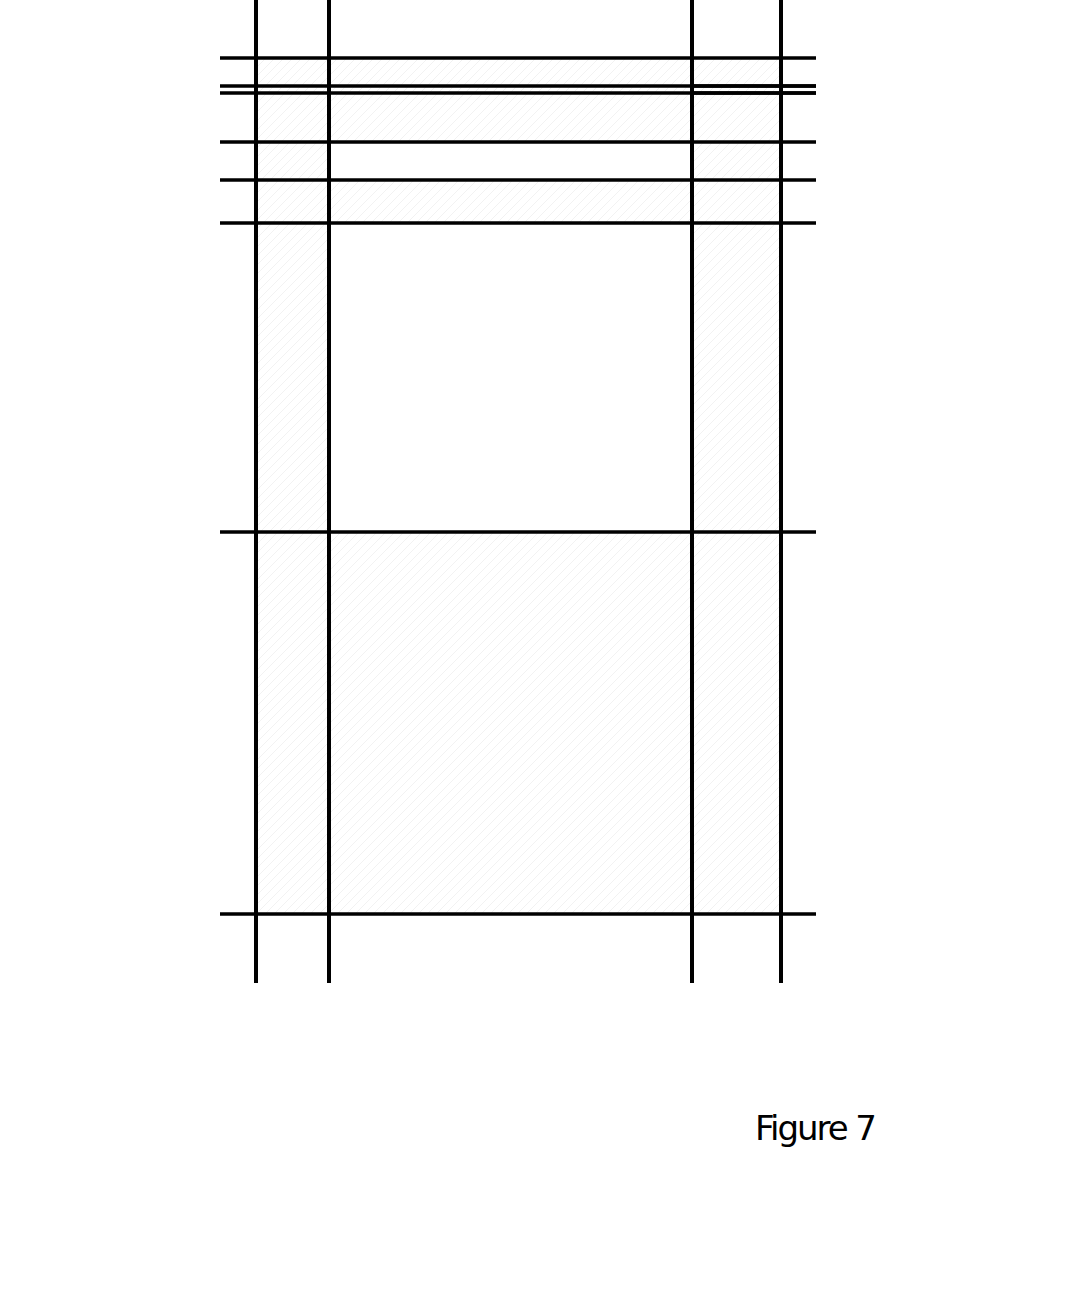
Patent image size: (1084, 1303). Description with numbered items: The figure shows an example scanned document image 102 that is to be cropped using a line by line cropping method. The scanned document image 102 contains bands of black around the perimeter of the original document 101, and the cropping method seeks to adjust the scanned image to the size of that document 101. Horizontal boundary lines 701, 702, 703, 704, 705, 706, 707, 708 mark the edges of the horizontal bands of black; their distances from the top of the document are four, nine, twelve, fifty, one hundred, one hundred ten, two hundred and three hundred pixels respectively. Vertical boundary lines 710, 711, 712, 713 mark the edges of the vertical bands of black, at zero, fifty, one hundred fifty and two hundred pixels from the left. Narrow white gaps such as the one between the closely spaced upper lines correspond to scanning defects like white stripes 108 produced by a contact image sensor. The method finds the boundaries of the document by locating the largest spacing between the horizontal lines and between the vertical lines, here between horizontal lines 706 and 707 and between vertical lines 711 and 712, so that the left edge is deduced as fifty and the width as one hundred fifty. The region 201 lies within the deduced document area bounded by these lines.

The boundary line 701 is at (220, 58).
The boundary line 702 is at (220, 86).
The boundary line 703 is at (220, 93).
The boundary line 704 is at (220, 142).
The boundary line 705 is at (218, 180).
The boundary line 706 is at (220, 223).
The boundary line 707 is at (220, 532).
The boundary line 708 is at (220, 914).
The boundary line 710 is at (256, 985).
The boundary line 711 is at (329, 985).
The boundary line 712 is at (692, 985).
The boundary line 713 is at (781, 985).
The document 101 is at (697, 337).
The scanned document image 102 is at (785, 487).
The hatched region 201 is at (512, 223).
The white stripes 108 is at (783, 90).